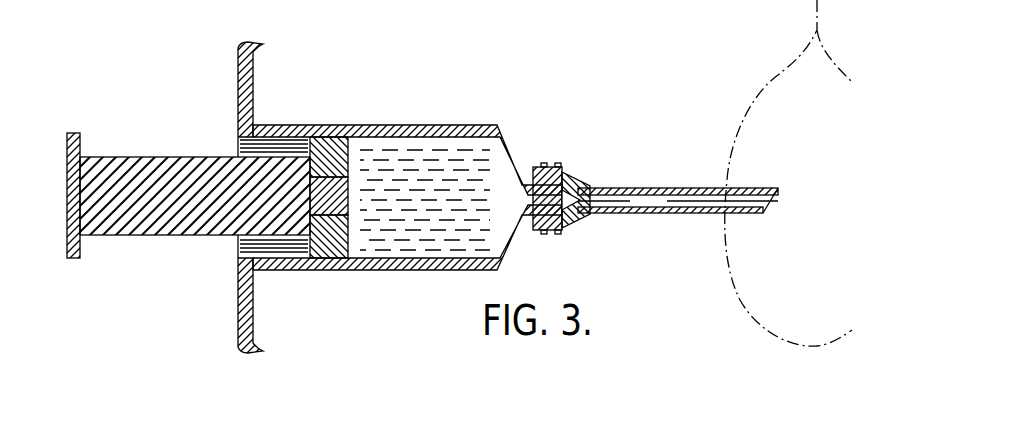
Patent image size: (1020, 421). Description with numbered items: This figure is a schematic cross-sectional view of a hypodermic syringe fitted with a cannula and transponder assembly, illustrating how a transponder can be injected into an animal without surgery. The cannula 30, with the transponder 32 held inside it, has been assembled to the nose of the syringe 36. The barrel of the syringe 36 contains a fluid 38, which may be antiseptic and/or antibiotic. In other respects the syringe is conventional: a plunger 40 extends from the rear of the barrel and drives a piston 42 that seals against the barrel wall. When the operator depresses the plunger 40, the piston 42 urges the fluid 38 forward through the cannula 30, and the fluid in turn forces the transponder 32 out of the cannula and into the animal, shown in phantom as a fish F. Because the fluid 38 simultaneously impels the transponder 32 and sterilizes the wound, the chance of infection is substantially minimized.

The cannula 30 is at (580, 187).
The transponder 32 is at (653, 190).
The syringe 36 is at (355, 127).
The fluid 38 is at (448, 247).
The plunger 40 is at (143, 157).
The piston 42 is at (350, 243).
The fish F is at (816, 112).